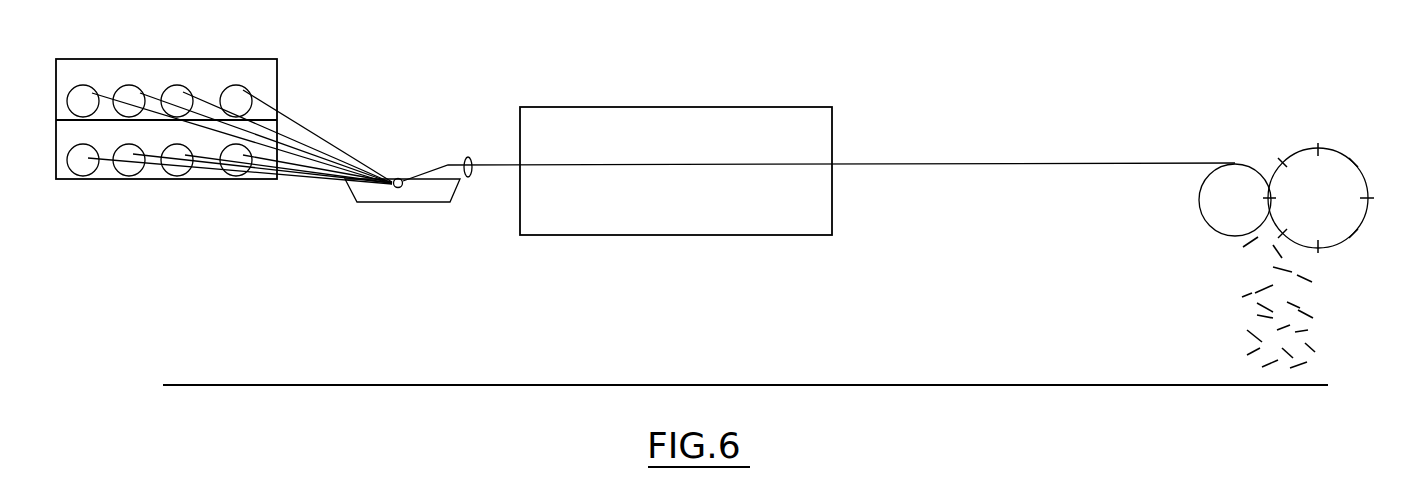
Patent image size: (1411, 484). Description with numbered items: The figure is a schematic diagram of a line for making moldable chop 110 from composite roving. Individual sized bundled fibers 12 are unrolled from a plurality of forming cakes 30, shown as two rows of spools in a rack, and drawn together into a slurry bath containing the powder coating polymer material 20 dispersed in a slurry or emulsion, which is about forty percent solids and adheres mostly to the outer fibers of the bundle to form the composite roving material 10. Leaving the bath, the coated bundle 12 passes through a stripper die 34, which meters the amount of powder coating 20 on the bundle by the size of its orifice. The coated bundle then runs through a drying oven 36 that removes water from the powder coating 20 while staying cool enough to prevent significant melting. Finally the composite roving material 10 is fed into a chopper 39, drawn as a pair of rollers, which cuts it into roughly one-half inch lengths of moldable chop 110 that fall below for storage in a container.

The composite roving material 10 is at (977, 162).
The sized bundled fibers 12 is at (327, 141).
The powder coating polymer material 20 is at (432, 193).
The forming cakes 30 is at (183, 92).
The stripper die 34 is at (469, 156).
The drying oven 36 is at (690, 113).
The chopper 39 is at (1298, 157).
The moldable chop 110 is at (1250, 292).